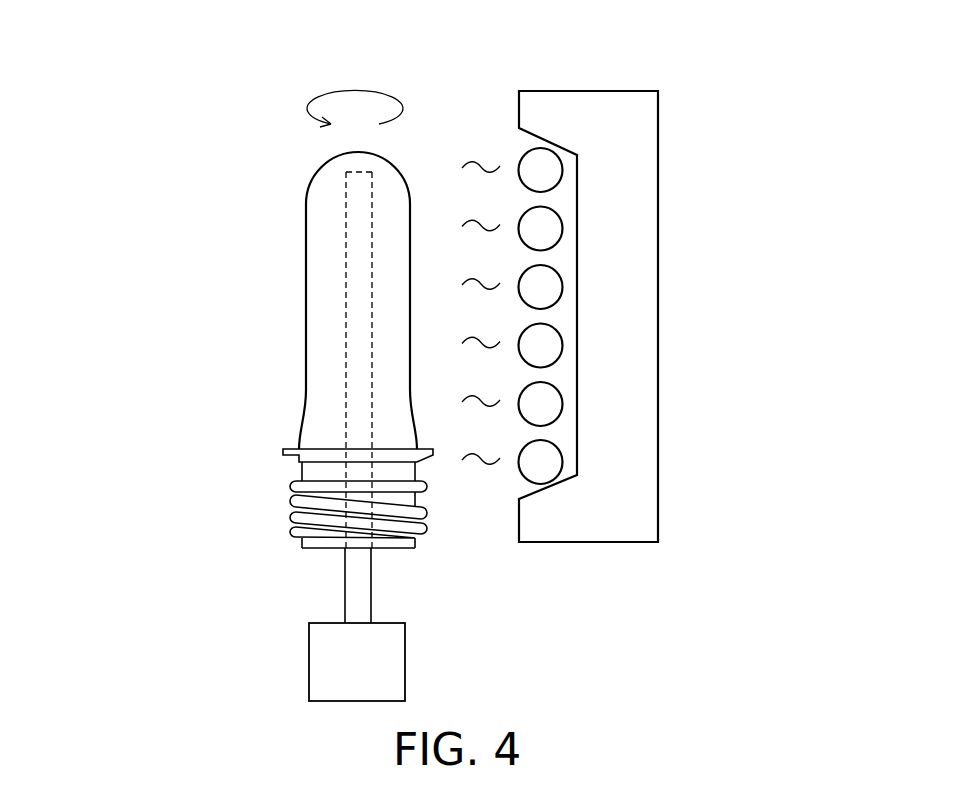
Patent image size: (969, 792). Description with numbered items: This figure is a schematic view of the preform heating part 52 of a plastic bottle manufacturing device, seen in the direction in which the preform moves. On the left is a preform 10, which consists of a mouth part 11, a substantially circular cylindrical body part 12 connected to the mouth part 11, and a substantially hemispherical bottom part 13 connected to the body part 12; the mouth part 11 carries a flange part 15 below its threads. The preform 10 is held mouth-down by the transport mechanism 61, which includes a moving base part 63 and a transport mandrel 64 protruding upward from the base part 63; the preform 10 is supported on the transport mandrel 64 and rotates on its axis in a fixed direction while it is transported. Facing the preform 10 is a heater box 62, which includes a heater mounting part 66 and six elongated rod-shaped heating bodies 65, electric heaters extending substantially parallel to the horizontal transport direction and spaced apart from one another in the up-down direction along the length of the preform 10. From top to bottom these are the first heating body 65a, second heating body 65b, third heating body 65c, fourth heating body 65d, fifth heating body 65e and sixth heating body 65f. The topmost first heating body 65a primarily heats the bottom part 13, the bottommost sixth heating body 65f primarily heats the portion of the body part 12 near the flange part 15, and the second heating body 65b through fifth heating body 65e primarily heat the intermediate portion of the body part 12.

The preform 10 is at (252, 355).
The mouth part 11 is at (298, 498).
The body part 12 is at (318, 245).
The bottom part 13 is at (330, 160).
The flange part 15 is at (290, 451).
The preform heating part 52 is at (465, 91).
The transport mechanism 61 is at (238, 570).
The heater box 62 is at (689, 112).
The base part 63 is at (318, 665).
The transport mandrel 64 is at (352, 592).
The heating bodies 65 is at (659, 320).
The first heating body 65a is at (547, 170).
The second heating body 65b is at (547, 229).
The third heating body 65c is at (547, 287).
The fourth heating body 65d is at (547, 345).
The fifth heating body 65e is at (547, 404).
The sixth heating body 65f is at (547, 462).
The heater mounting part 66 is at (594, 518).